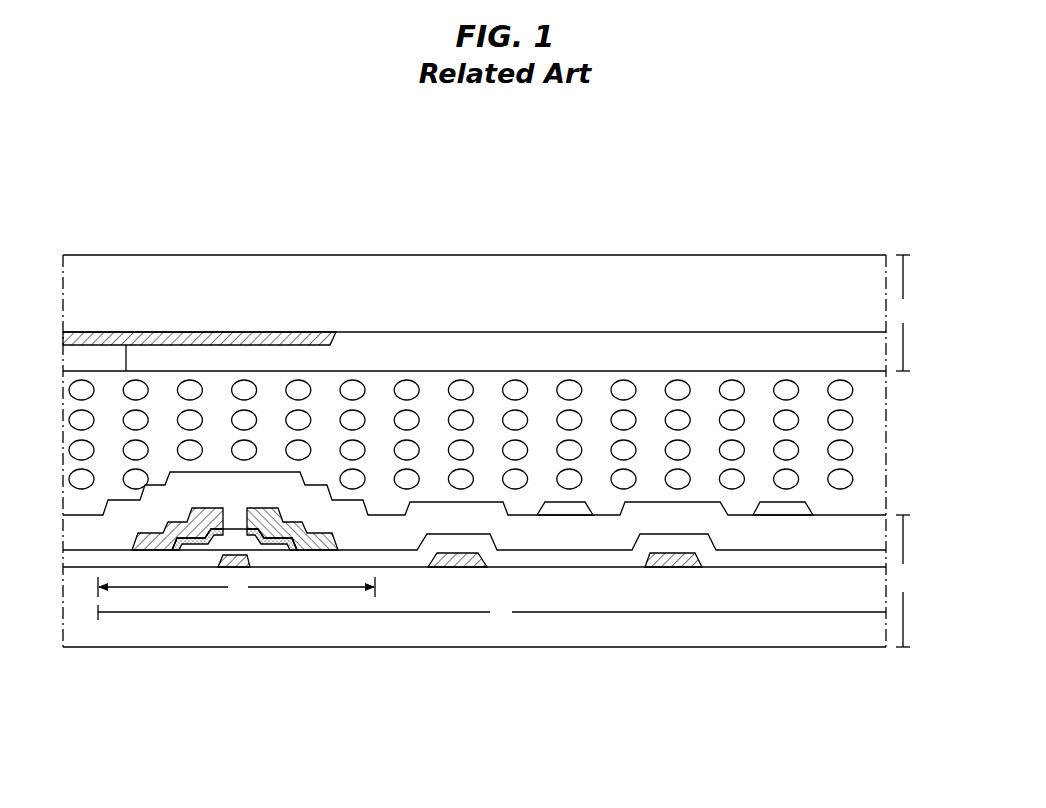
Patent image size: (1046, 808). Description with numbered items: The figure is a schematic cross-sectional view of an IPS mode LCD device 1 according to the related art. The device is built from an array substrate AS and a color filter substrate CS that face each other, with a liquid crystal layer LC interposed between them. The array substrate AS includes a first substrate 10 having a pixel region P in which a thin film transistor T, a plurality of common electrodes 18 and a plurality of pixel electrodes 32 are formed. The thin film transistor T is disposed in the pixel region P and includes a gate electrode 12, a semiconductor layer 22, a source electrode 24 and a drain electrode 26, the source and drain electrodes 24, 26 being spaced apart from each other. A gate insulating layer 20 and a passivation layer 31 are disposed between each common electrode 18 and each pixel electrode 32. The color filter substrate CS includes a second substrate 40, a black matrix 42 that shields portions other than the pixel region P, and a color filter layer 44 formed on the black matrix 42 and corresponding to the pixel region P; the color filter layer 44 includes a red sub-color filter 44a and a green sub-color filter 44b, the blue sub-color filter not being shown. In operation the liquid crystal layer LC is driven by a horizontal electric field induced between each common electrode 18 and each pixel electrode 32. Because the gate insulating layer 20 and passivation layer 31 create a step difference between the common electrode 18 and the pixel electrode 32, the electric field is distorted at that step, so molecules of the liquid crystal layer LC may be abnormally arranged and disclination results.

The IPS mode LCD device 1 is at (846, 197).
The first substrate 10 is at (474, 607).
The gate electrode 12 is at (230, 567).
The common electrode 18 is at (470, 567).
The gate insulating layer 20 is at (412, 552).
The semiconductor layer 22 is at (290, 552).
The source electrode 24 is at (208, 507).
The drain electrode 26 is at (267, 507).
The passivation layer 31 is at (862, 527).
The pixel electrode 32 is at (566, 512).
The second substrate 40 is at (474, 293).
The black matrix 42 is at (262, 337).
The color filter layer 44 is at (118, 196).
The red sub-color filter 44a is at (110, 357).
The green sub-color filter 44b is at (172, 357).
The liquid crystal layer LC is at (870, 406).
The color filter substrate CS is at (903, 313).
The array substrate AS is at (903, 581).
The thin film transistor T is at (236, 587).
The pixel region P is at (480, 612).